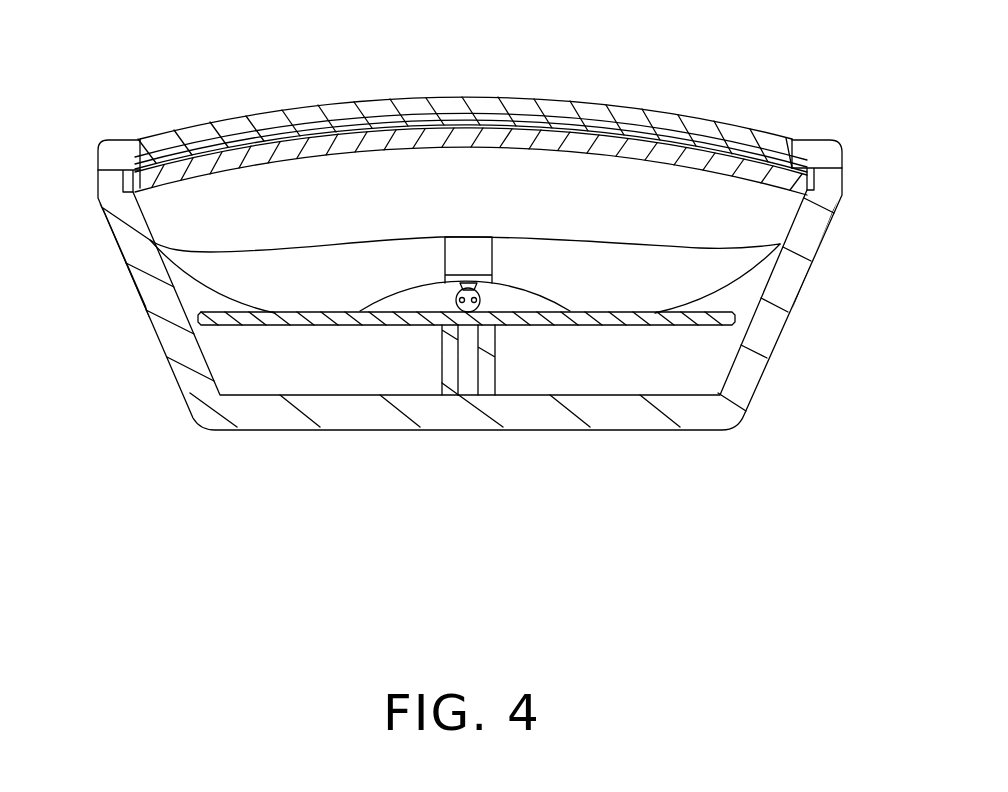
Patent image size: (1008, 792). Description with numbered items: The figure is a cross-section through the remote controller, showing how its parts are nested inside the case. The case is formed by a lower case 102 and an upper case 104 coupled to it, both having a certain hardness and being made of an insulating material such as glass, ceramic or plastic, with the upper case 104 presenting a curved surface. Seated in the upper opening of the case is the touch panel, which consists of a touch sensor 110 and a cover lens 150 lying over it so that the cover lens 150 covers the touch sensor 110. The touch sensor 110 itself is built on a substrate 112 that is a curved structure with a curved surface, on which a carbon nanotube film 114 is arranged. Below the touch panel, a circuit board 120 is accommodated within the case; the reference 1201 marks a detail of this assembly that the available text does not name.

The lower case 102 is at (177, 338).
The upper case 104 is at (130, 143).
The touch sensor 110 is at (472, 106).
The substrate 112 is at (717, 147).
The carbon nanotube film 114 is at (627, 128).
The circuit board 120 is at (738, 347).
The cover lens 150 is at (270, 111).
The adhesive layer 1201 is at (507, 121).